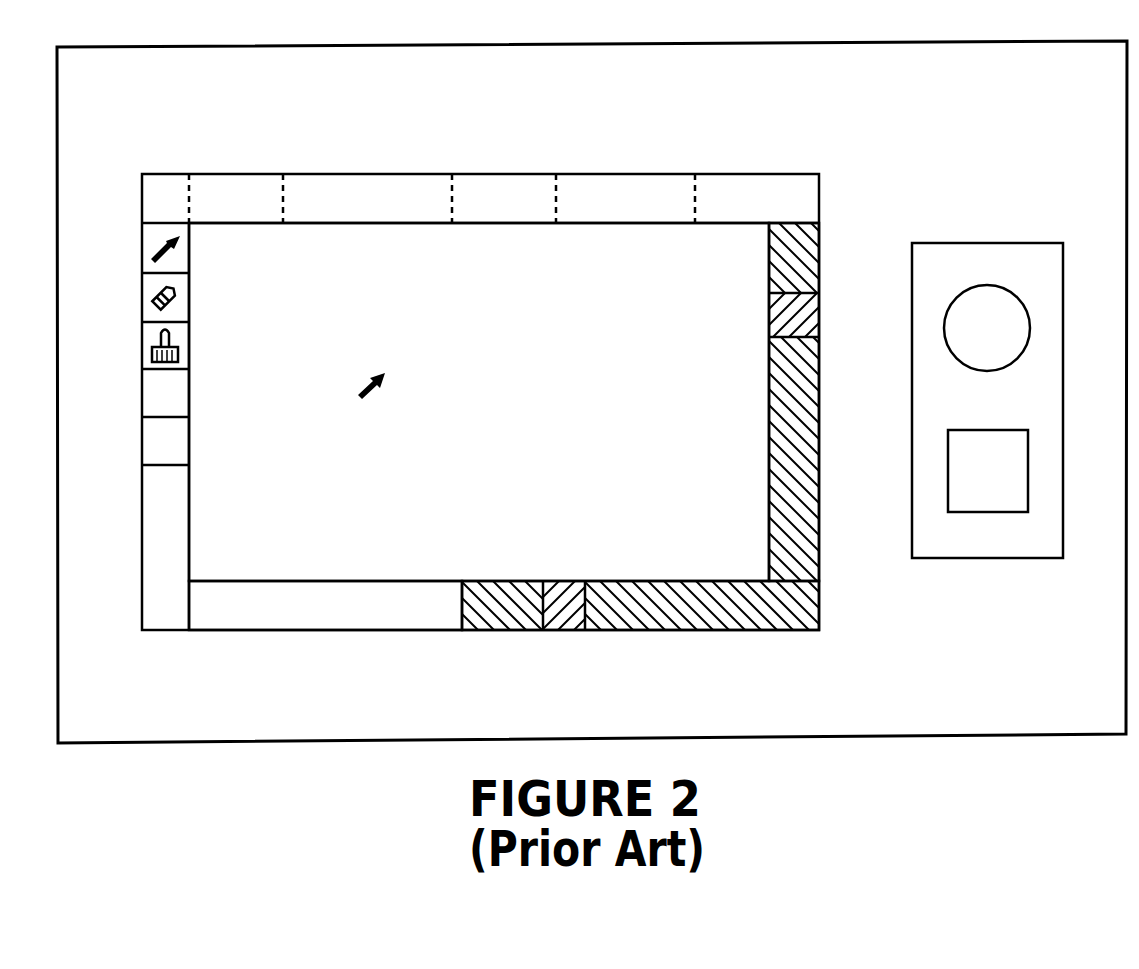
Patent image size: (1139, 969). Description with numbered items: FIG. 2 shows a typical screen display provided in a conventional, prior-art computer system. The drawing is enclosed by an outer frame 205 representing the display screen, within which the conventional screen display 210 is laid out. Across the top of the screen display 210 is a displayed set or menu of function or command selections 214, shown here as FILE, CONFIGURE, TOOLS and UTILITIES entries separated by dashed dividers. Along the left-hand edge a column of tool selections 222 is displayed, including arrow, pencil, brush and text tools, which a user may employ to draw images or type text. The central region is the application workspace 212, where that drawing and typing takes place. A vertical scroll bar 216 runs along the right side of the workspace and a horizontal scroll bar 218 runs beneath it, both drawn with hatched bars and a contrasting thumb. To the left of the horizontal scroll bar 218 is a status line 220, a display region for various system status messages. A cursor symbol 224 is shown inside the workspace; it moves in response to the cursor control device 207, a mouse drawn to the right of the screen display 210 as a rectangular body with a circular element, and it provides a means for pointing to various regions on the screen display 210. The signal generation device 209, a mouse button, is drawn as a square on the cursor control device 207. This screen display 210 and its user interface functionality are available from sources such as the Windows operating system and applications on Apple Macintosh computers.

The display screen 205 is at (818, 42).
The cursor control device 207 is at (998, 243).
The signal generation device 209 is at (995, 512).
The screen display 210 is at (838, 166).
The application workspace 212 is at (515, 353).
The menu of function or command selections 214 is at (695, 174).
The vertical scroll bar 216 is at (821, 223).
The horizontal scroll bar 218 is at (820, 630).
The status line 220 is at (462, 630).
The tool selections 222 is at (142, 225).
The cursor symbol 224 is at (368, 389).